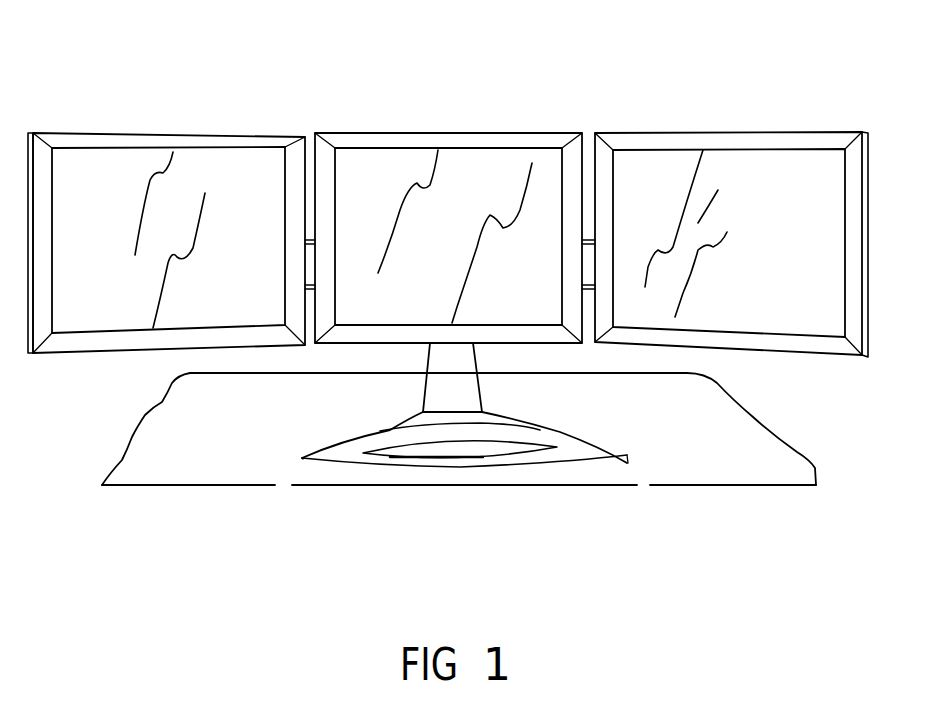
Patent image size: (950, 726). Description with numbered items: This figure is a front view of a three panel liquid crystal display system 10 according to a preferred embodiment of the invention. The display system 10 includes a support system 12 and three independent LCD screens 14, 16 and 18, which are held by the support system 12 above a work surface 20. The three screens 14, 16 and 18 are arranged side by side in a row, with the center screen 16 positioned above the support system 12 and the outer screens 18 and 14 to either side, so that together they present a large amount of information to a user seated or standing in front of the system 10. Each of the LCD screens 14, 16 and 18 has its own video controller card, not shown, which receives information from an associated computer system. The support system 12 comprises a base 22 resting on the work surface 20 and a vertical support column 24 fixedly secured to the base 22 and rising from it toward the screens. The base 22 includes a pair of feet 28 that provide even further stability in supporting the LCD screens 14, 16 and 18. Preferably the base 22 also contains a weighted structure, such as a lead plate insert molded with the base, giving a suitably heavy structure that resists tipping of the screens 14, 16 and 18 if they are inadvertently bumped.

The display system 10 is at (175, 76).
The support system 12 is at (380, 390).
The LCD screen 14 is at (707, 133).
The LCD screen 16 is at (501, 133).
The LCD screen 18 is at (218, 133).
The work surface 20 is at (157, 443).
The base 22 is at (565, 432).
The vertical support column 24 is at (485, 391).
The feet 28 is at (302, 458).